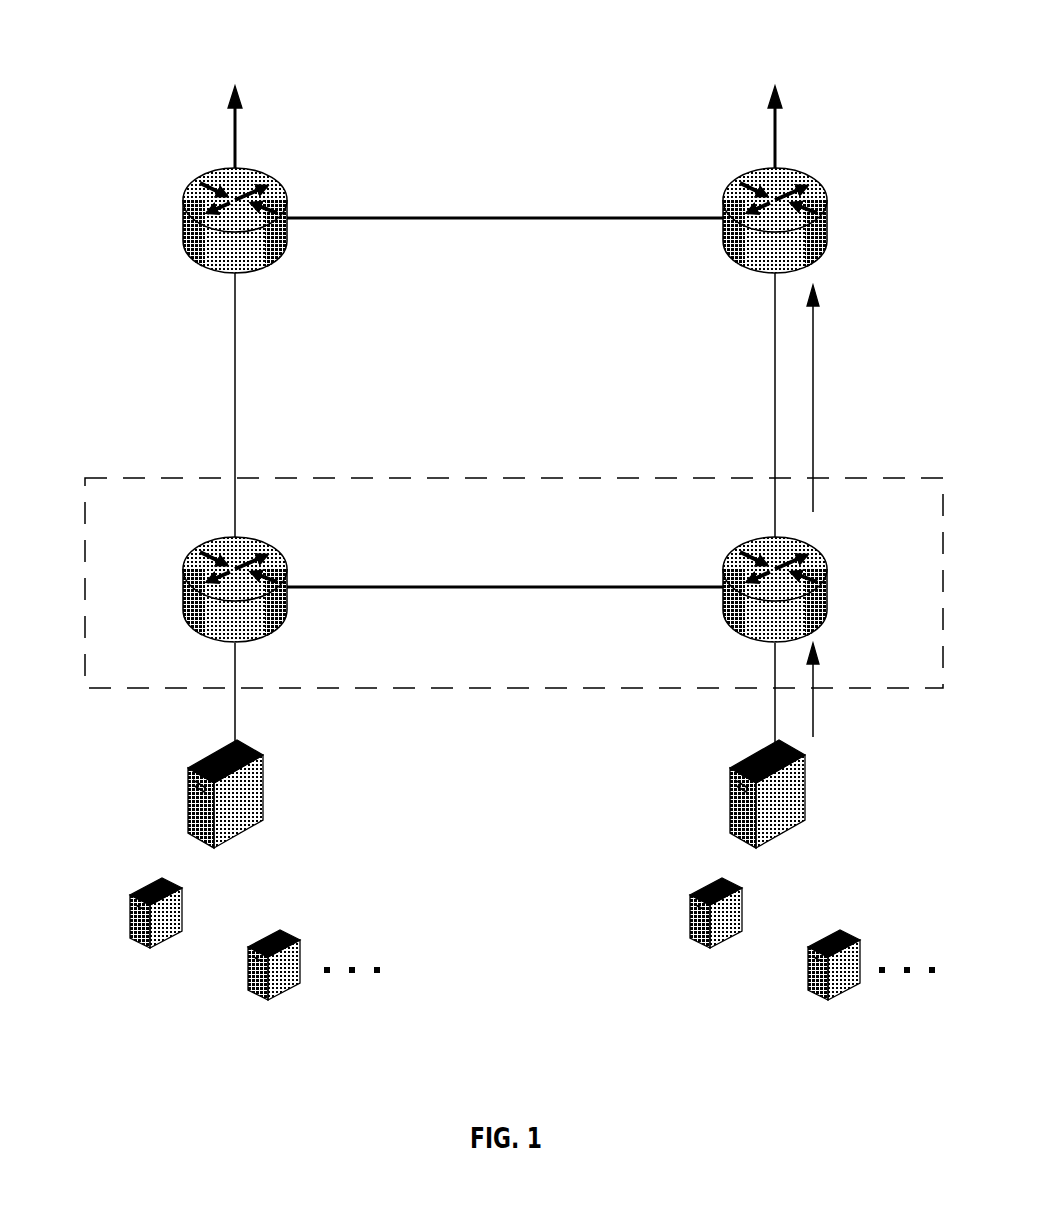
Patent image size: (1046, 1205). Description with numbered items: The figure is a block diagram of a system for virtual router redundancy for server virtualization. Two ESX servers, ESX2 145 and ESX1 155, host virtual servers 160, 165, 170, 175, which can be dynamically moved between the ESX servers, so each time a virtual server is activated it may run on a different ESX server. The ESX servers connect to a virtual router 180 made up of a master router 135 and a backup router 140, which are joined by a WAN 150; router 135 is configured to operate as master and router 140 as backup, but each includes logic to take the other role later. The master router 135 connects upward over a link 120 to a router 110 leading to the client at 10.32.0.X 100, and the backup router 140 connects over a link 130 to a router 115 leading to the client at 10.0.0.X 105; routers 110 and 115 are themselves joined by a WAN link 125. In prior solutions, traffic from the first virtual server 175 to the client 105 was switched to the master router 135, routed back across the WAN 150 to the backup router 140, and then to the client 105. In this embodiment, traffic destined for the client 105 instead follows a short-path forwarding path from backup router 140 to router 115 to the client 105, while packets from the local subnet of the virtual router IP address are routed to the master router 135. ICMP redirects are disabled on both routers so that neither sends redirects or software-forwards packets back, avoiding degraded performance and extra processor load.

The client at 10.32.0.X 100 is at (290, 67).
The client at 10.0.0.X 105 is at (817, 68).
The router 110 is at (288, 190).
The router 115 is at (828, 197).
The link between router 110 and master router 120 is at (230, 358).
The WAN link between upstream routers 125 is at (485, 267).
The link between router 115 and backup router 130 is at (775, 360).
The master router 135 is at (185, 563).
The backup router 140 is at (725, 563).
The ESX server ESX2 145 is at (198, 758).
The WAN 150 is at (488, 617).
The ESX server ESX1 155 is at (738, 758).
The virtual server 160 is at (130, 892).
The virtual server 165 is at (300, 943).
The virtual server 170 is at (692, 893).
The virtual server 1 175 is at (860, 943).
The virtual router 180 is at (515, 477).